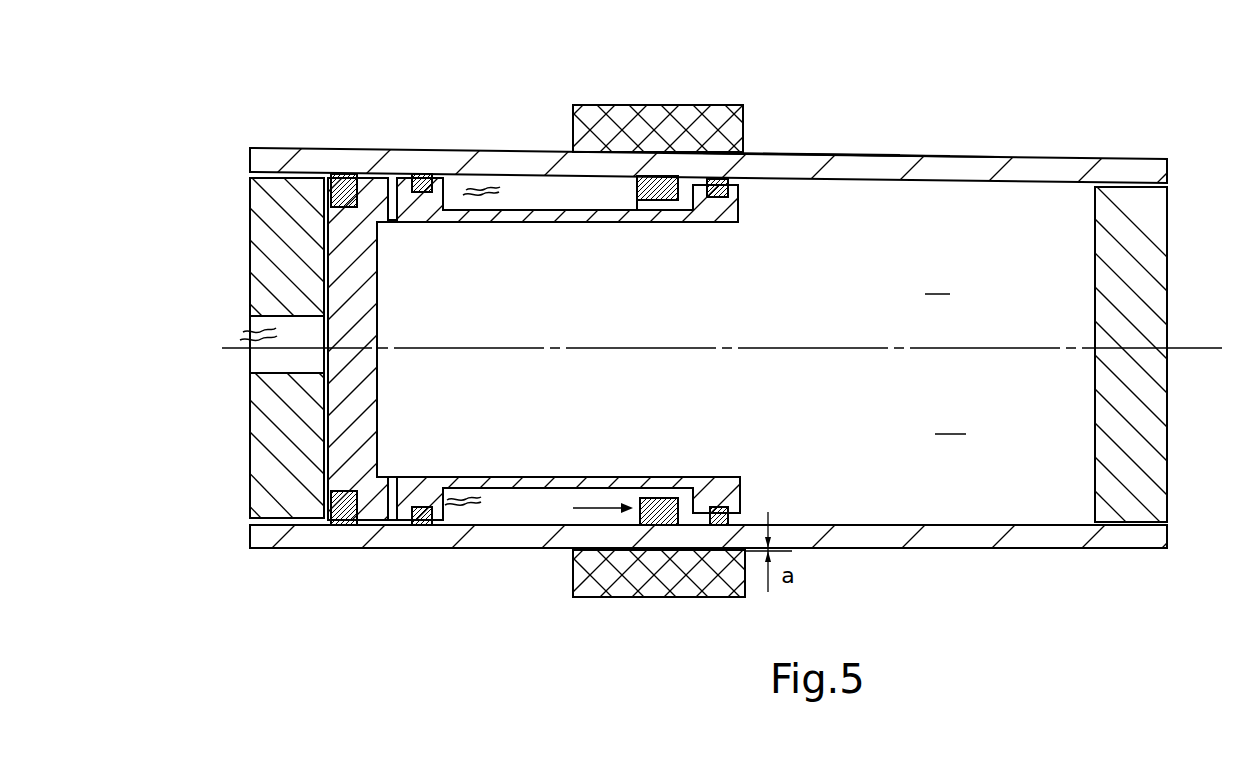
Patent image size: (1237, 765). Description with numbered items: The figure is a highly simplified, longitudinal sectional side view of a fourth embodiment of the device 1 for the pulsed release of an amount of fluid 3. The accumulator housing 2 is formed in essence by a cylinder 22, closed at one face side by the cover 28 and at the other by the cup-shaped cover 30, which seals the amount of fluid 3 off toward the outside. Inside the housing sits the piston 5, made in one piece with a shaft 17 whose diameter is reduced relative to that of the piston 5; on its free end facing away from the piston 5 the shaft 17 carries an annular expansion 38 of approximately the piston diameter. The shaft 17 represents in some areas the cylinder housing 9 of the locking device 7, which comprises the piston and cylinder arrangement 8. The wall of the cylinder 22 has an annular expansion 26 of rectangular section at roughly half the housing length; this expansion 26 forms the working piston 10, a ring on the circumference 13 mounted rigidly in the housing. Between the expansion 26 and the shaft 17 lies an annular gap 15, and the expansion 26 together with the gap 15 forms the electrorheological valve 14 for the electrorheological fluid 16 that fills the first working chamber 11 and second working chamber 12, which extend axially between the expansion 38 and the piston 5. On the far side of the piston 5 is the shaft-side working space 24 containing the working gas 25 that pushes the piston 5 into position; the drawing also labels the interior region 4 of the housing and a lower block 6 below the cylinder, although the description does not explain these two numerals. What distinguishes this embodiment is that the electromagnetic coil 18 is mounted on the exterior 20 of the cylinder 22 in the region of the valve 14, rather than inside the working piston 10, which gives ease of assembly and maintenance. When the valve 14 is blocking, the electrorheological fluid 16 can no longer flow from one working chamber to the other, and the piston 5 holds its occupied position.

The device 1 is at (949, 119).
The accumulator housing 2 is at (1075, 153).
The amount of fluid 3 is at (243, 331).
The working chamber 4 is at (937, 283).
The piston 5 is at (352, 228).
The magnet block 6 is at (613, 605).
The locking device 7 is at (690, 606).
The piston and cylinder arrangement 8 is at (704, 468).
The cylinder housing 9 is at (548, 483).
The working piston 10 is at (589, 508).
The first working chamber 11 is at (712, 486).
The second working chamber 12 is at (518, 497).
The circumference 13 is at (635, 212).
The electrorheological valve 14 is at (682, 237).
The annular gap 15 is at (657, 203).
The electrorheological fluid 16 is at (484, 188).
The shaft 17 is at (415, 214).
The electromagnetic coil 18 is at (700, 120).
The exterior 20 is at (773, 145).
The cylinder 22 is at (891, 158).
The shaft-side working space 24 is at (950, 423).
The working gas 25 is at (943, 492).
The annular expansion 26 is at (630, 493).
The cover 28 is at (1140, 283).
The cover 30 is at (276, 424).
The annular expansion 38 is at (446, 218).